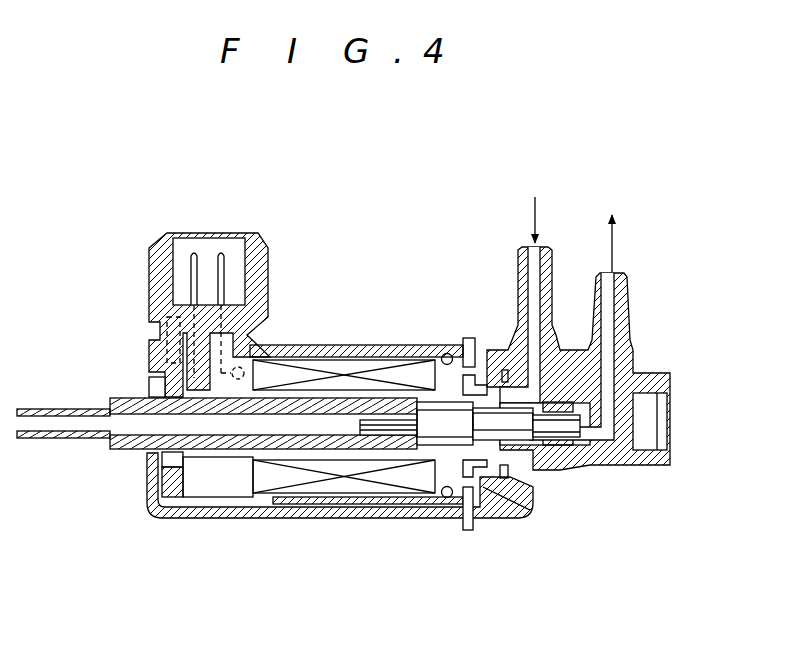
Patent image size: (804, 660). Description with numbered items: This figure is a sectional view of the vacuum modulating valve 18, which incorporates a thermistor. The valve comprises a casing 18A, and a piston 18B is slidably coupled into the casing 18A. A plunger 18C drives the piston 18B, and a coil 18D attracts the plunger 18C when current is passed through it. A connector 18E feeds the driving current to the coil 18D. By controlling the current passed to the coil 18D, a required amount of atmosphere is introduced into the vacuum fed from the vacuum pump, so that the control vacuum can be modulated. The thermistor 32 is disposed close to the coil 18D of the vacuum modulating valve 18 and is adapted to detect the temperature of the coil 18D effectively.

The vacuum modulating valve 18 is at (412, 278).
The casing 18A is at (582, 463).
The piston 18B is at (497, 500).
The plunger 18C is at (120, 450).
The coil 18D is at (353, 370).
The connector 18E is at (157, 262).
The thermistor 32 is at (245, 368).